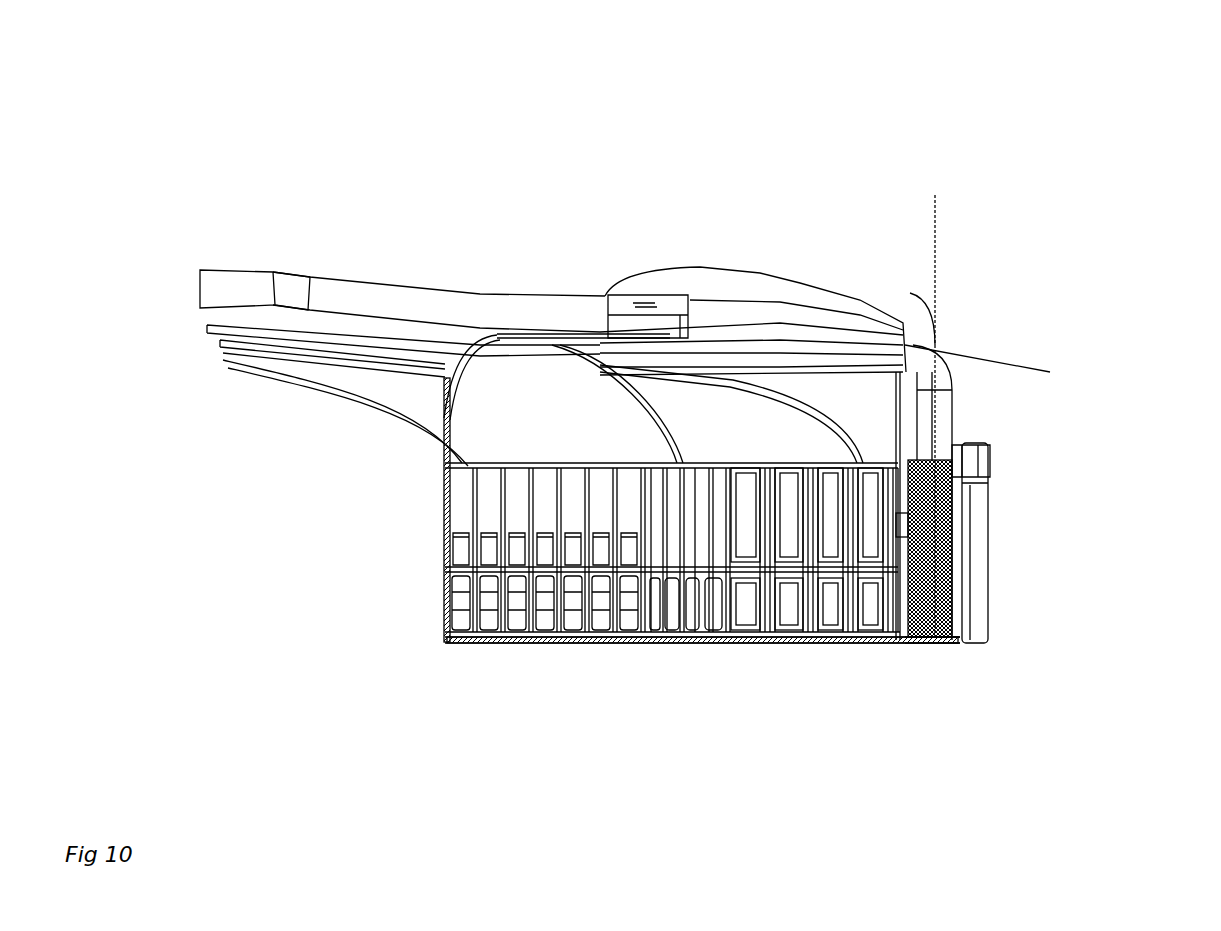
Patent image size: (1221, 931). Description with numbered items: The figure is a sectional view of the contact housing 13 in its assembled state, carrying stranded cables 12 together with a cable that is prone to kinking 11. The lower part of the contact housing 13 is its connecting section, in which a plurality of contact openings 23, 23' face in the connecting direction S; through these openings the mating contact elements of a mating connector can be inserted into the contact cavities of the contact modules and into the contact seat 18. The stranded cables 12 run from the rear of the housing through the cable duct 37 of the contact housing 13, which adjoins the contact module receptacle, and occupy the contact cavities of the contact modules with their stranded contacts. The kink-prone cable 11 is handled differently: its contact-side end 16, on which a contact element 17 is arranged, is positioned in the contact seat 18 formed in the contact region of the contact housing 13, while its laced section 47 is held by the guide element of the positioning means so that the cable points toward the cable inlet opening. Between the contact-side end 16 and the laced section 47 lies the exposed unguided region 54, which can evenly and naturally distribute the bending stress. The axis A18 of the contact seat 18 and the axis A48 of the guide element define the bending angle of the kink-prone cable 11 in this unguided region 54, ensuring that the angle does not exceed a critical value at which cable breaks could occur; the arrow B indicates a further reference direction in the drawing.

The cable that is prone to kinking 11 is at (220, 285).
The stranded cables 12 is at (205, 355).
The contact housing 13 is at (760, 110).
The contact-side end 16 is at (962, 458).
The contact element 17 is at (950, 553).
The contact seat 18 is at (956, 452).
The contact openings 23 is at (696, 536).
The contact opening 23' is at (926, 675).
The cable duct 37 is at (524, 405).
The laced section 47 is at (788, 290).
The unguided region 54 is at (950, 340).
The axis of the contact seat A18 is at (940, 225).
The axis of the guide element A48 is at (1018, 364).
The direction B is at (298, 562).
The connecting direction S is at (1175, 450).